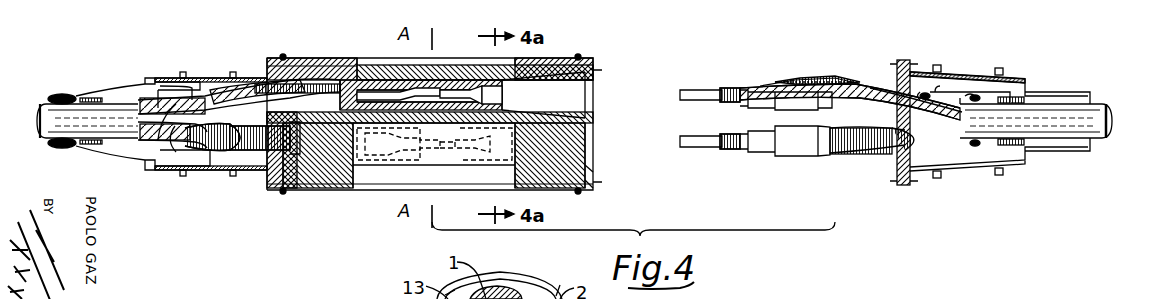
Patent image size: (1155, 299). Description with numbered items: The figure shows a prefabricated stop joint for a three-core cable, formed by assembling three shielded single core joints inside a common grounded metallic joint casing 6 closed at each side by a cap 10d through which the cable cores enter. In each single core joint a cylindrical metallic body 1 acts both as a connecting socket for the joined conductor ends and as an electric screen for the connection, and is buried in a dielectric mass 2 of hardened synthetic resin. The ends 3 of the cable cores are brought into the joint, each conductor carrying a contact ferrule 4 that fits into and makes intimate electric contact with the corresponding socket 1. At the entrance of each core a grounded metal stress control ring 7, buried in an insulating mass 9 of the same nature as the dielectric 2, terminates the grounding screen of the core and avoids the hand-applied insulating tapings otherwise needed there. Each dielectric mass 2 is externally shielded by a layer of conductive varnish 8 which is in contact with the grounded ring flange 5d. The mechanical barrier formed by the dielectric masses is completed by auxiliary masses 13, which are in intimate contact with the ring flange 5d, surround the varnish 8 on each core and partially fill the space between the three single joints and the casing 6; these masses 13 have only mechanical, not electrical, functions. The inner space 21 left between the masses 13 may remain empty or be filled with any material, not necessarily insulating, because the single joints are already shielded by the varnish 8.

The cap 10d is at (252, 39).
The ring flange 5d is at (288, 58).
The joint casing 6 is at (331, 58).
The conductive varnish 8 is at (375, 67).
The cylindrical metallic body 1 is at (438, 80).
The dielectric mass 2 is at (465, 70).
The auxiliary masses 13 is at (328, 186).
The inner space 21 is at (392, 184).
The contact ferrule 4 is at (702, 95).
The cable core ends 3 is at (760, 95).
The insulating mass 9 is at (780, 86).
The stress control ring 7 is at (820, 84).